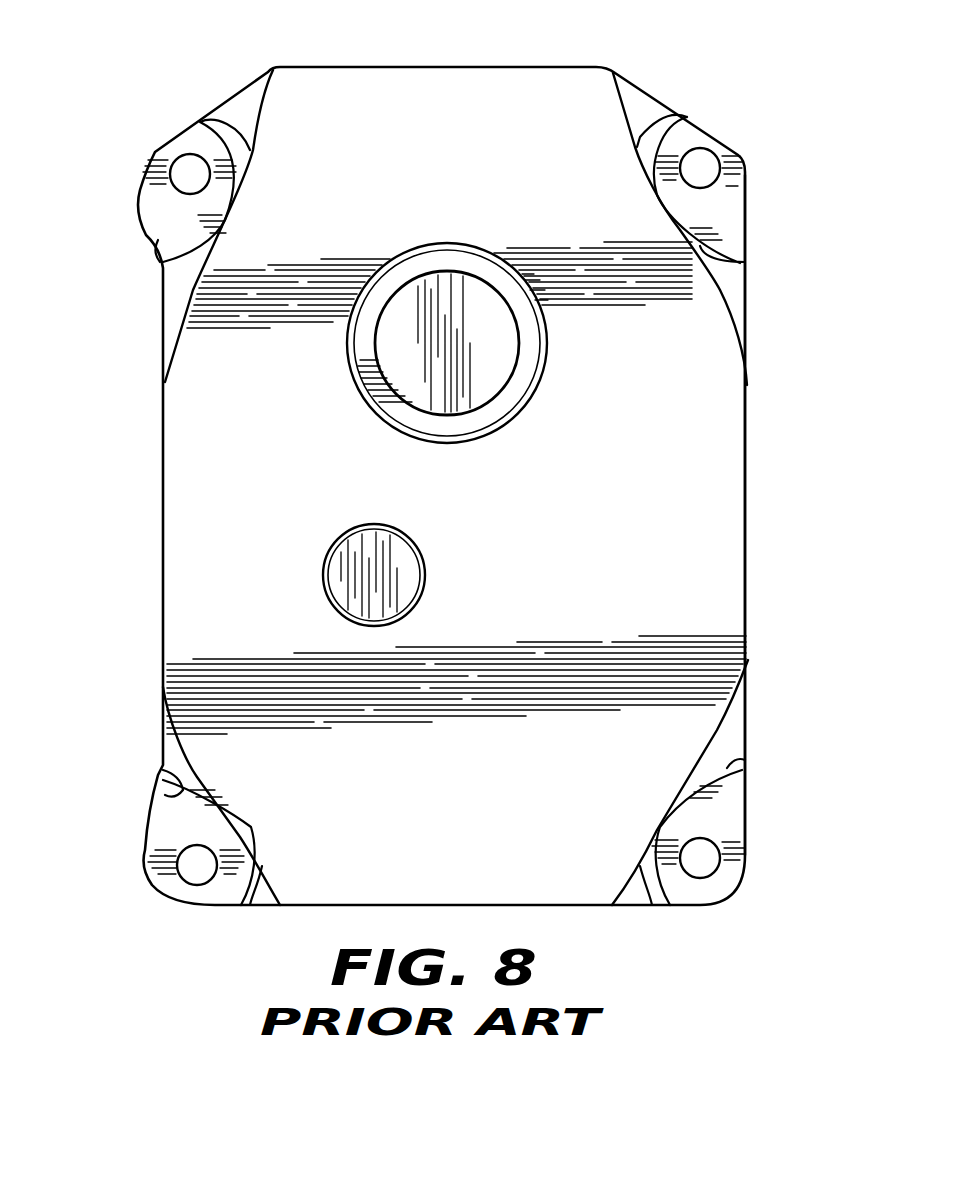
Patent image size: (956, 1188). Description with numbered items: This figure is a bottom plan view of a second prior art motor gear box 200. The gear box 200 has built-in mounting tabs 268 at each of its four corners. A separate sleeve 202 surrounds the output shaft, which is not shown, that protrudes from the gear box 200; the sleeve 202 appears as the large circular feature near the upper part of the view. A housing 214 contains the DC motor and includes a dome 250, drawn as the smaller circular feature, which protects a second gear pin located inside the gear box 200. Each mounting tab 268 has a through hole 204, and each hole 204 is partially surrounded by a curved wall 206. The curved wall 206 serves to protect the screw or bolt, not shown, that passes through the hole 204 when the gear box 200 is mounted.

The motor gear box 200 is at (150, 540).
The sleeve 202 is at (508, 393).
The through hole 204 is at (182, 156).
The curved wall 206 is at (158, 240).
The housing 214 is at (737, 537).
The dome 250 is at (403, 558).
The mounting tab 268 is at (163, 298).